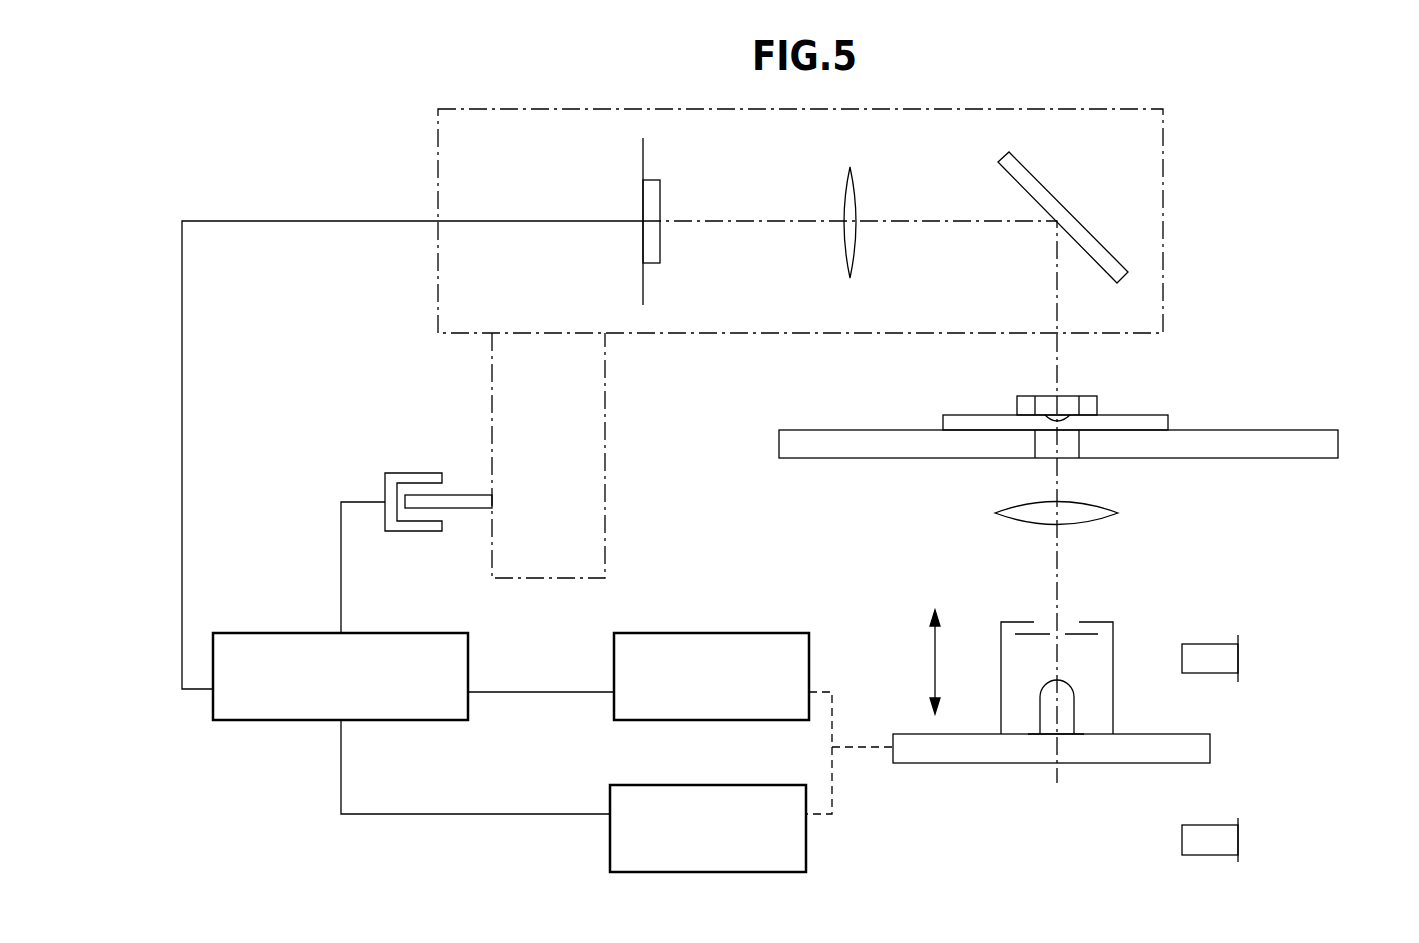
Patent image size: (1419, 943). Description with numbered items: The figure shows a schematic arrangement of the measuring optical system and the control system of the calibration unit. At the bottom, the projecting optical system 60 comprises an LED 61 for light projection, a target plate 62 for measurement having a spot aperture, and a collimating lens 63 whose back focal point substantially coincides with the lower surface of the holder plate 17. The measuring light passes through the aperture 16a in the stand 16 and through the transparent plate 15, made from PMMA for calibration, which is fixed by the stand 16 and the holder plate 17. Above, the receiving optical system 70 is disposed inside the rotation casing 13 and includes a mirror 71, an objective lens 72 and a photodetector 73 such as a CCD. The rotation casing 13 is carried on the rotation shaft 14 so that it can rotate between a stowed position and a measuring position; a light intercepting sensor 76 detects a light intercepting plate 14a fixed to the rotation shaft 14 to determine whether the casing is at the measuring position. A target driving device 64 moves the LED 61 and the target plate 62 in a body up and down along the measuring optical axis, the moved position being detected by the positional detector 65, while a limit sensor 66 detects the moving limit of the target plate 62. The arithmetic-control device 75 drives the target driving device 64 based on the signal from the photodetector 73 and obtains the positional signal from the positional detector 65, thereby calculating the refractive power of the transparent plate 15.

The rotation casing 13 is at (1163, 170).
The rotation shaft 14 is at (605, 430).
The light intercepting plate 14a is at (485, 495).
The transparent plate 15 is at (1115, 420).
The stand 16 is at (1298, 445).
The aperture 16a is at (1045, 450).
The holder plate 17 is at (1020, 400).
The projecting optical system 60 is at (988, 577).
The LED 61 is at (1057, 692).
The target plate 62 is at (1085, 633).
The collimating lens 63 is at (1090, 513).
The target driving device 64 is at (688, 633).
The positional detector 65 is at (806, 843).
The limit sensor 66 is at (1225, 660).
The receiving optical system 70 is at (592, 172).
The mirror 71 is at (1100, 240).
The objective lens 72 is at (851, 203).
The photodetector 73 is at (655, 200).
The arithmetic-control device 75 is at (470, 656).
The light intercepting sensor 76 is at (403, 473).